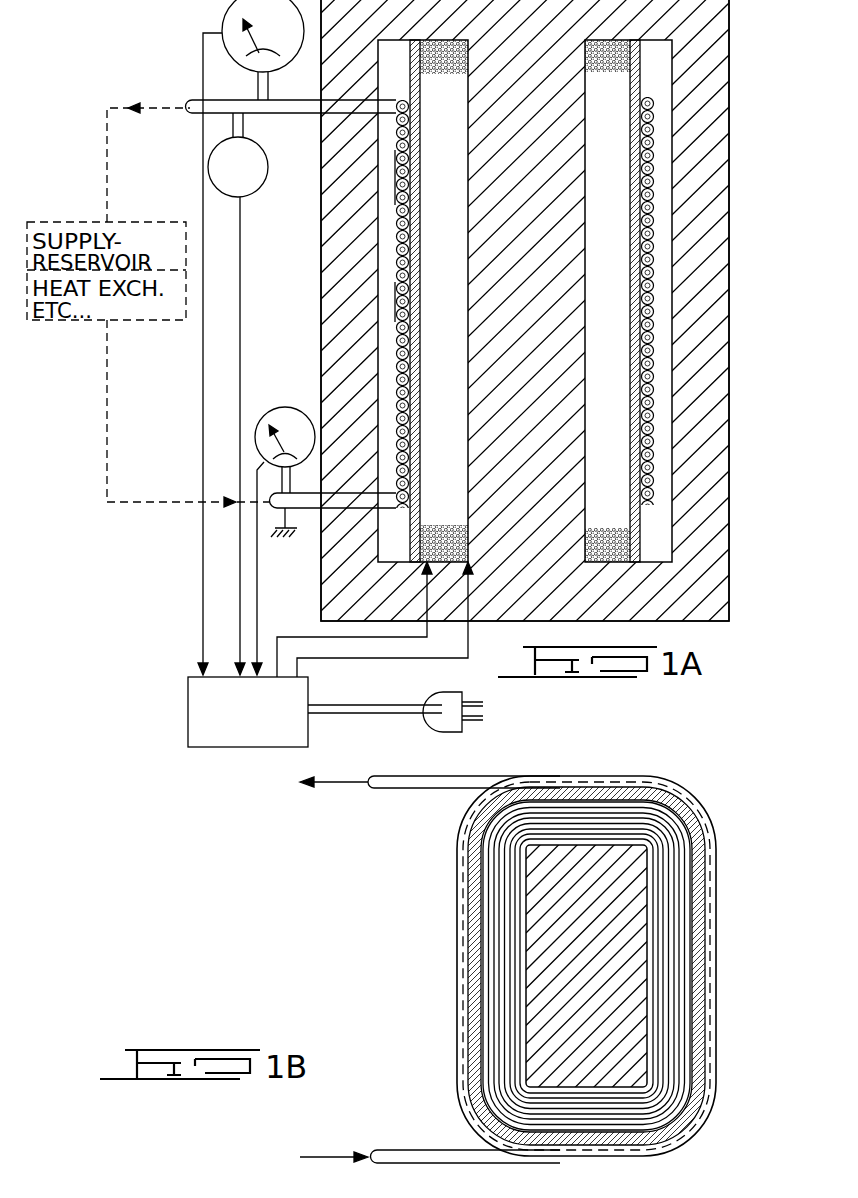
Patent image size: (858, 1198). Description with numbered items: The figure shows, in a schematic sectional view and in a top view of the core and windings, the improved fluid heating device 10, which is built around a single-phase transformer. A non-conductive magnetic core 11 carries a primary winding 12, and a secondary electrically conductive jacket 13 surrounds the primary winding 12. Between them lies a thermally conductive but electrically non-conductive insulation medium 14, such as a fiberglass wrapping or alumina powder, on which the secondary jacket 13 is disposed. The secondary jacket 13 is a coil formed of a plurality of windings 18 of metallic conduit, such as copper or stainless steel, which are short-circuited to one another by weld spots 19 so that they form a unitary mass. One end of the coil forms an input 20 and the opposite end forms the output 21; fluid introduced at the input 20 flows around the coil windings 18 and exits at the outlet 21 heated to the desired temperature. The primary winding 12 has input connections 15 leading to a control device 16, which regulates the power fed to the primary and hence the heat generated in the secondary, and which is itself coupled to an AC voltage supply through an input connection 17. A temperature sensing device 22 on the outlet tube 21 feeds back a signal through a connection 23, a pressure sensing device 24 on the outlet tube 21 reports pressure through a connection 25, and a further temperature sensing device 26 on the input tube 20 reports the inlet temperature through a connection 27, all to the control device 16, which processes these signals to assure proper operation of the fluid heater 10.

In FIG. 1A, the fluid heating device 10 is at (515, 632).
In FIG. 1A, the non-conductive magnetic core 11 is at (348, 253).
In FIG. 1B, the non-conductive magnetic core 11 is at (550, 943).
In FIG. 1A, the primary winding 12 is at (577, 58).
In FIG. 1B, the primary winding 12 is at (624, 820).
In FIG. 1A, the secondary electrically conductive jacket 13 is at (385, 222).
In FIG. 1B, the secondary electrically conductive jacket 13 is at (690, 794).
In FIG. 1A, the insulation medium 14 is at (415, 214).
In FIG. 1B, the insulation medium 14 is at (558, 796).
In FIG. 1A, the input connections 15 is at (380, 658).
In FIG. 1A, the control device 16 is at (256, 747).
In FIG. 1A, the input connection 17 is at (457, 696).
In FIG. 1A, the windings 18 is at (395, 201).
In FIG. 1A, the weld spots 19 is at (395, 318).
In FIG. 1A, the input 20 is at (314, 510).
In FIG. 1B, the input 20 is at (412, 1152).
In FIG. 1A, the output 21 is at (305, 100).
In FIG. 1B, the output 21 is at (409, 790).
In FIG. 1A, the temperature sensing device 22 is at (225, 14).
In FIG. 1A, the connection 23 is at (203, 557).
In FIG. 1A, the pressure sensing device 24 is at (262, 157).
In FIG. 1A, the connection 25 is at (240, 350).
In FIG. 1A, the temperature sensing device 26 is at (286, 407).
In FIG. 1A, the connection 27 is at (240, 605).